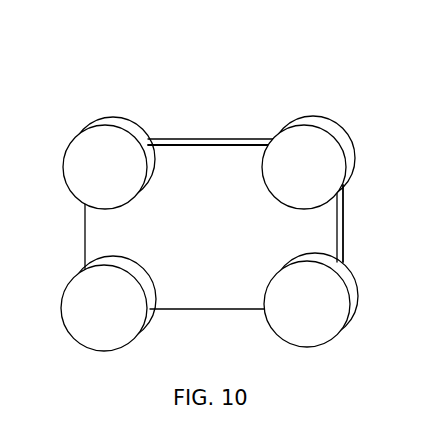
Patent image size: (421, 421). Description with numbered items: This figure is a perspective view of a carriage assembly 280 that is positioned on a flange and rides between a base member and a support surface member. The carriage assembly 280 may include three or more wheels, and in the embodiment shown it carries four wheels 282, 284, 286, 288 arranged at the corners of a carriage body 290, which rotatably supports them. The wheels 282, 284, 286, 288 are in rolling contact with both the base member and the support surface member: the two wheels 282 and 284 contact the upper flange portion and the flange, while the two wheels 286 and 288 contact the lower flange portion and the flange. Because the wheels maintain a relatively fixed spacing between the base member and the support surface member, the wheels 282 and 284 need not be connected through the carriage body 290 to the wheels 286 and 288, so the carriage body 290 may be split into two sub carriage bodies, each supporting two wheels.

The carriage assembly 280 is at (205, 194).
The wheel 282 is at (98, 120).
The wheel 284 is at (328, 118).
The wheel 286 is at (73, 280).
The wheel 288 is at (272, 328).
The carriage body 290 is at (220, 138).